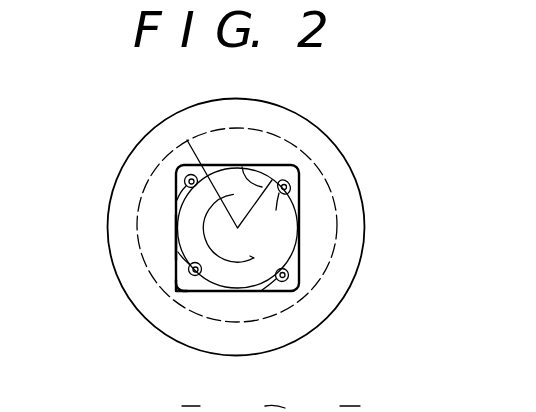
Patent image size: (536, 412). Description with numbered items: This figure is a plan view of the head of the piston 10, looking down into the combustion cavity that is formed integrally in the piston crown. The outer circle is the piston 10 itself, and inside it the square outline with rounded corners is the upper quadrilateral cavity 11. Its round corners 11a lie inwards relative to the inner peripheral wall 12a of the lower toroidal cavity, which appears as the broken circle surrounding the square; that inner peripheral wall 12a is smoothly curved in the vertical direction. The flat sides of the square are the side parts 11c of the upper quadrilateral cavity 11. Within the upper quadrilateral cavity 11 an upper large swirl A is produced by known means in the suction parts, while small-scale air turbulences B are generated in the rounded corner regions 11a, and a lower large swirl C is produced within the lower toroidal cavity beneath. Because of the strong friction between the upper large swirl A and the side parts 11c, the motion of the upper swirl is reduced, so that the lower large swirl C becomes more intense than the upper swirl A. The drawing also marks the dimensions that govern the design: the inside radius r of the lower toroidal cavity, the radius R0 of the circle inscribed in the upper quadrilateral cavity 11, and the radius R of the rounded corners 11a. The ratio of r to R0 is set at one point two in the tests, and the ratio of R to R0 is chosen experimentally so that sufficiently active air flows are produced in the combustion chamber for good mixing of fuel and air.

The piston 10 is at (358, 199).
The upper quadrilateral cavity 11 is at (268, 292).
The round corners 11a is at (180, 292).
The side parts 11c is at (177, 238).
The inner peripheral wall 12a is at (287, 141).
The upper large swirl A is at (204, 228).
The air turbulences B is at (298, 277).
The lower large swirl C is at (214, 312).
The radius of the rounded corners R is at (290, 182).
The radius of the inscribed circle R0 is at (243, 166).
The inside radius r is at (232, 196).